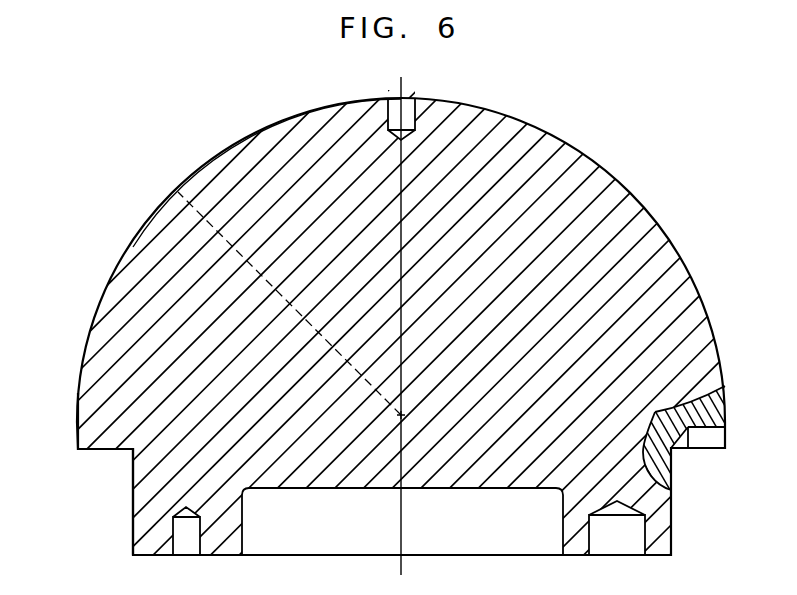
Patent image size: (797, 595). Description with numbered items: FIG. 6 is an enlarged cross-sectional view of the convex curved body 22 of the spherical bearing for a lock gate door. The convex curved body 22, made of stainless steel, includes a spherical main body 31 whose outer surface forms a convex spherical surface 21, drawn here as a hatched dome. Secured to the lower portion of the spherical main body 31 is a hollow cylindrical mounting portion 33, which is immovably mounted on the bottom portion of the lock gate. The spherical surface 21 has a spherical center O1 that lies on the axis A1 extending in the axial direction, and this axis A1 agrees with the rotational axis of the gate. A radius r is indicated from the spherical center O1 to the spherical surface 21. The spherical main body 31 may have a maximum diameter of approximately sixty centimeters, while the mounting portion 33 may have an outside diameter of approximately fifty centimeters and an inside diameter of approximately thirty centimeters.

The convex spherical surface 21 is at (285, 118).
The convex curved body 22 is at (107, 305).
The spherical main body 31 is at (92, 352).
The hollow cylindrical mounting portion 33 is at (663, 533).
The radius of curvature r is at (178, 199).
The spherical center O1 is at (400, 420).
The axis A1 is at (403, 519).